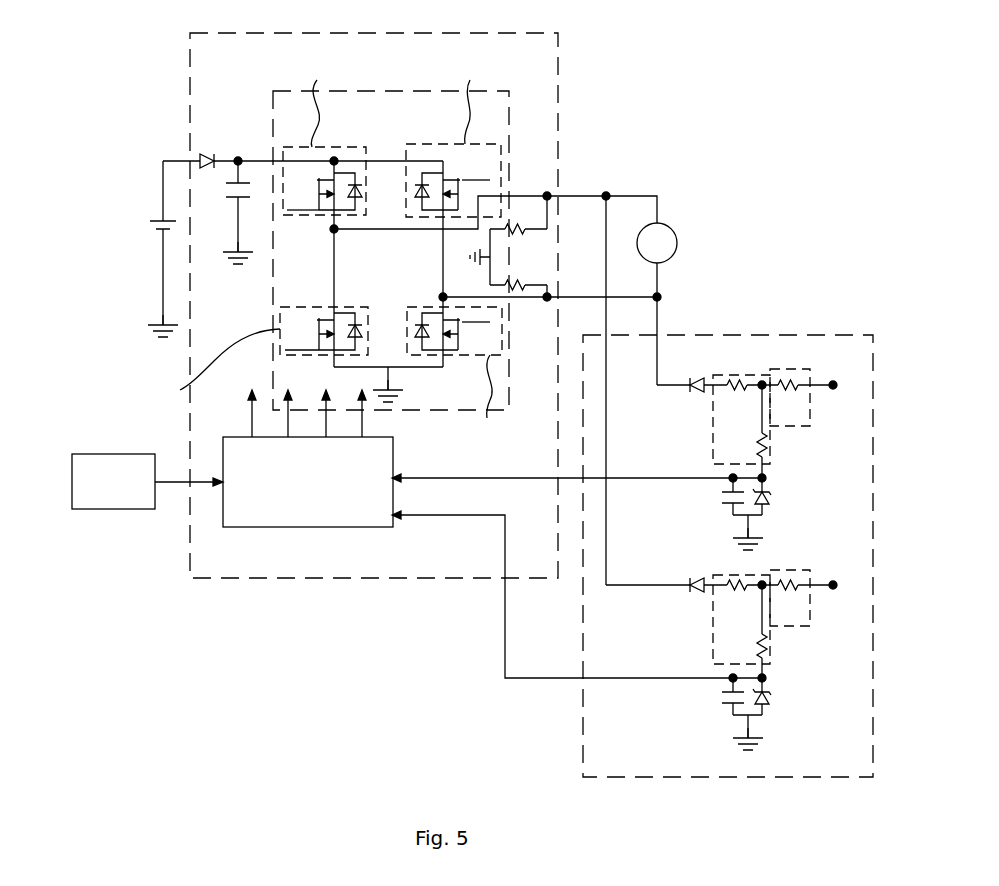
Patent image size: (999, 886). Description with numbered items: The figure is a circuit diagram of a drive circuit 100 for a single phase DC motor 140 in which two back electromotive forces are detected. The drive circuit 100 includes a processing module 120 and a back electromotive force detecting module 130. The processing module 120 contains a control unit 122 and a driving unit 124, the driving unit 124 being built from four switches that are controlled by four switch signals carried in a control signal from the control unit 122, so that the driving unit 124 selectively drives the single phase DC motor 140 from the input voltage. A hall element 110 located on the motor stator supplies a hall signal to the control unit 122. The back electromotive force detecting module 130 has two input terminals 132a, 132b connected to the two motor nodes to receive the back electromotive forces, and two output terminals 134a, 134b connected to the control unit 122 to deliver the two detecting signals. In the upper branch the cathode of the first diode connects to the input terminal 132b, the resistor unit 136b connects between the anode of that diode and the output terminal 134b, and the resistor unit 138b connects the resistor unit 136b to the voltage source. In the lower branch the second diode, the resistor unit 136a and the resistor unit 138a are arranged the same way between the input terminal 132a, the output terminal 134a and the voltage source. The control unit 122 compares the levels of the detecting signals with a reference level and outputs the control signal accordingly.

The drive circuit 100 is at (524, 405).
The hall element 110 is at (132, 491).
The processing module 120 is at (558, 48).
The control unit 122 is at (326, 498).
The driving unit 124 is at (509, 140).
The back electromotive force detecting module 130 is at (705, 753).
The input terminal 132a is at (608, 215).
The input terminal 132b is at (660, 320).
The output terminal 134a is at (580, 683).
The output terminal 134b is at (583, 478).
The resistor unit 136a is at (742, 572).
The resistor unit 136b is at (737, 375).
The resistor unit 138a is at (810, 570).
The resistor unit 138b is at (800, 369).
The single phase DC motor 140 is at (672, 229).